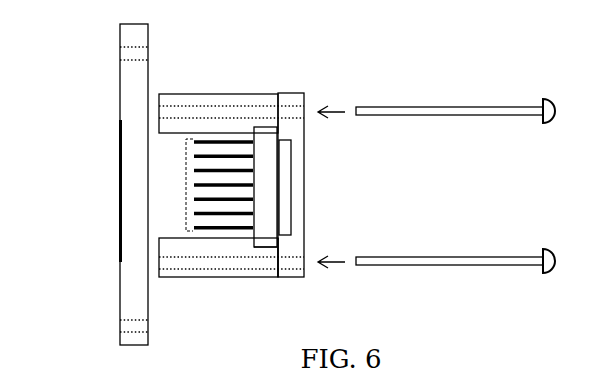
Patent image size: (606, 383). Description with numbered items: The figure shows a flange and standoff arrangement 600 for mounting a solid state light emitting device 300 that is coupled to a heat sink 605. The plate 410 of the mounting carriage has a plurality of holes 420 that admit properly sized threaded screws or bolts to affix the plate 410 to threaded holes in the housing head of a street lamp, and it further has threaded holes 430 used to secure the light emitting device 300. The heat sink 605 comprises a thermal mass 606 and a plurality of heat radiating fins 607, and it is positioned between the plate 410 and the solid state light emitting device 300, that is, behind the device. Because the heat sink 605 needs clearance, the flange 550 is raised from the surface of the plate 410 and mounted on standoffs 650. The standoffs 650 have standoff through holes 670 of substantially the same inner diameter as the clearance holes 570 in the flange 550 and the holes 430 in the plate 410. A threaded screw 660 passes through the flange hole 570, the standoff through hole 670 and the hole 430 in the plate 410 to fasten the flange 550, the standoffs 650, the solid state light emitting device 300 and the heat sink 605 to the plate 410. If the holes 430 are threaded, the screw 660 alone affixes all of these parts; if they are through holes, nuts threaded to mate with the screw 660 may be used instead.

The electrode assembly 600 is at (290, 180).
The plate 410 is at (148, 33).
The holes 420 is at (150, 56).
The threaded holes 430 is at (116, 126).
The standoffs 650 is at (260, 94).
The standoff through holes 670 is at (196, 100).
The clearance holes 570 is at (309, 103).
The flange 550 is at (305, 232).
The solid state light emitting device 300 is at (291, 186).
The heat sink 605 is at (281, 254).
The thermal mass 606 is at (276, 268).
The heat radiating fins 607 is at (186, 185).
The threaded screw 660 is at (507, 113).